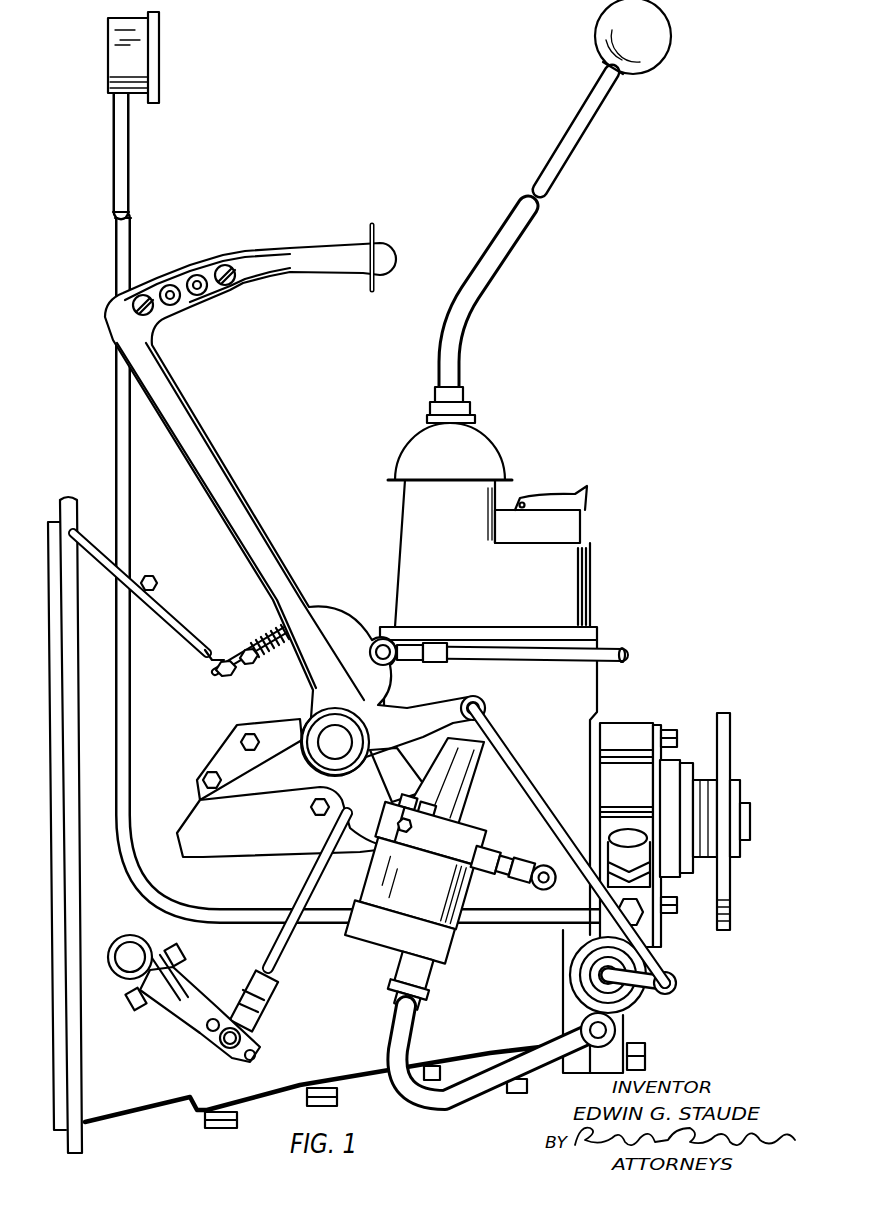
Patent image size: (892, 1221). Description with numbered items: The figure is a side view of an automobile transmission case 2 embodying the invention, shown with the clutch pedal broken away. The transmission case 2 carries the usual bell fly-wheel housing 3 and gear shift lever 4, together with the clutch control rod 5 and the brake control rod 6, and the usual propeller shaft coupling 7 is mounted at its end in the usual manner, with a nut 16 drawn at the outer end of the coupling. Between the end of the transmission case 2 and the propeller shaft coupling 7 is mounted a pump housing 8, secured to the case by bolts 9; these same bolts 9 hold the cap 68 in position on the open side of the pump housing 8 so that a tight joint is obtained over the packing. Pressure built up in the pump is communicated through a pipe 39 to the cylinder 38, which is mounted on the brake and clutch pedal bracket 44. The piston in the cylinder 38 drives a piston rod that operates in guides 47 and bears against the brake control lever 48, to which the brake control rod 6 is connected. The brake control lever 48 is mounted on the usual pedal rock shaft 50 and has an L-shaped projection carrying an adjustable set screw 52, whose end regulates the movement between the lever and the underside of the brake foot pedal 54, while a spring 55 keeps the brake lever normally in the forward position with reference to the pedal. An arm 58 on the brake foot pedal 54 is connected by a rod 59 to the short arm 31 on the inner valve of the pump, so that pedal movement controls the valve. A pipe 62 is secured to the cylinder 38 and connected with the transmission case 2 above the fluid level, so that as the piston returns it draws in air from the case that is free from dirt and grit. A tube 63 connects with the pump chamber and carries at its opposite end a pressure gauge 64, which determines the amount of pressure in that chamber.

The transmission case 2 is at (587, 693).
The bell fly-wheel housing 3 is at (86, 807).
The gear shift lever 4 is at (580, 113).
The clutch control rod 5 is at (282, 975).
The brake control rod 6 is at (612, 658).
The propeller shaft coupling 7 is at (723, 735).
The pump housing 8 is at (637, 733).
The bolts 9 is at (641, 1053).
The nut 16 is at (745, 840).
The short arm 31 is at (647, 997).
The cylinder 38 is at (410, 902).
The pipe 39 is at (410, 1027).
The brake and clutch pedal bracket 44 is at (286, 788).
The guides 47 is at (455, 790).
The brake control lever 48 is at (407, 765).
The pedal rock shaft 50 is at (335, 738).
The adjustable set screw 52 is at (218, 678).
The brake foot pedal 54 is at (197, 440).
The spring 55 is at (262, 632).
The arm 58 is at (466, 695).
The rod 59 is at (533, 797).
The pipe 62 is at (525, 870).
The tube 63 is at (518, 914).
The pressure gauge 64 is at (118, 70).
The cap 68 is at (660, 728).